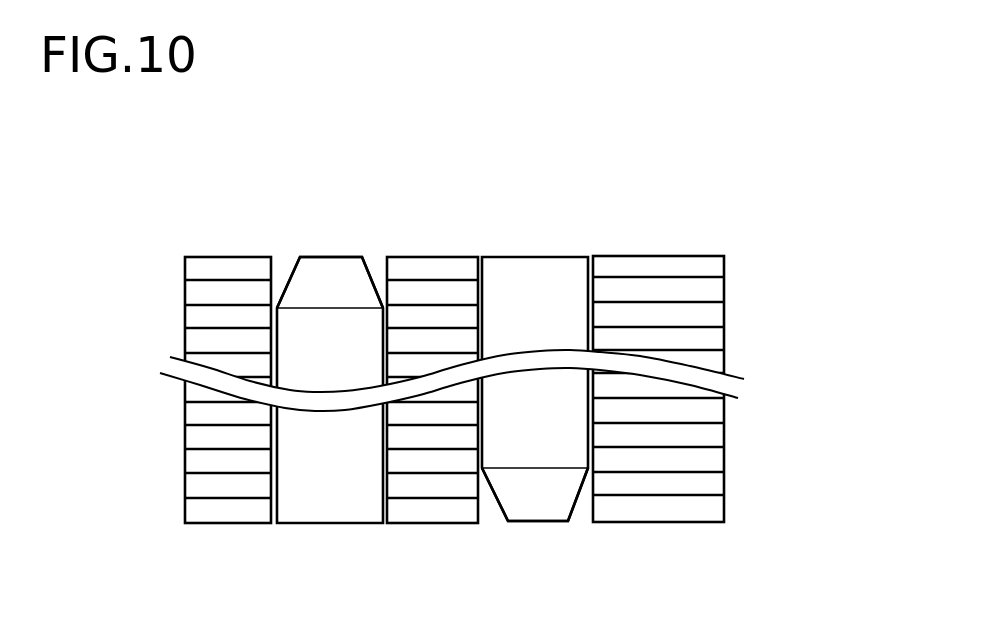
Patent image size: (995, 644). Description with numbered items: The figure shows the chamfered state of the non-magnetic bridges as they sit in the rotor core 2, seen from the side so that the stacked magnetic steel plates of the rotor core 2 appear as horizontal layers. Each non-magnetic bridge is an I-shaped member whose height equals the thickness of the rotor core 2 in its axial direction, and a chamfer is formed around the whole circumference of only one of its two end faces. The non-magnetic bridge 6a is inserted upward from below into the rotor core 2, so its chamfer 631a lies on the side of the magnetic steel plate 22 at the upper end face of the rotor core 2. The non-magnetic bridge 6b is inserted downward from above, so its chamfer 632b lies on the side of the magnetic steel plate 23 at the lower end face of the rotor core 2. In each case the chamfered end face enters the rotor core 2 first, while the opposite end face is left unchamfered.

The rotor core 2 is at (250, 258).
The magnetic steel plate 22 is at (213, 258).
The magnetic steel plate 23 is at (233, 512).
The non-magnetic bridge 6a is at (362, 258).
The non-magnetic bridge 6b is at (519, 258).
The chamfer 631a is at (290, 260).
The chamfer 632b is at (580, 504).